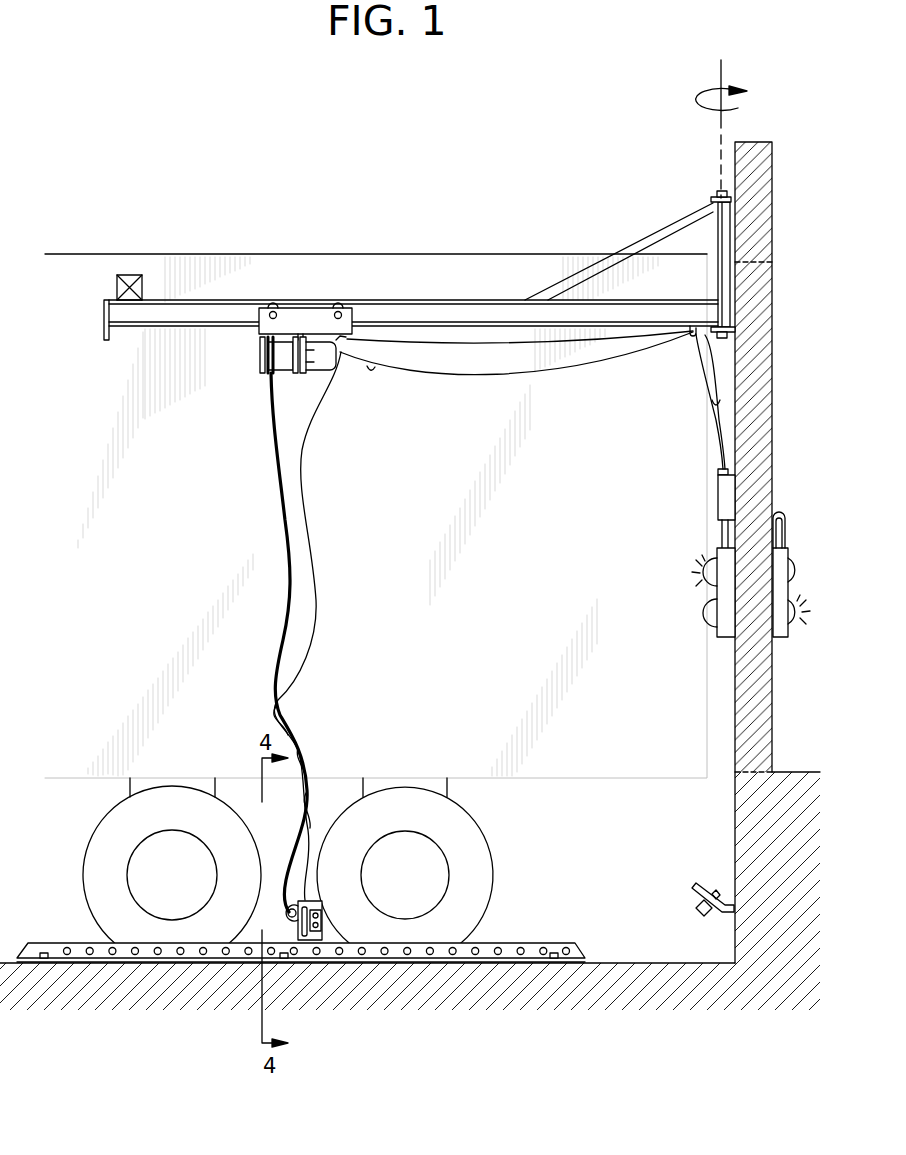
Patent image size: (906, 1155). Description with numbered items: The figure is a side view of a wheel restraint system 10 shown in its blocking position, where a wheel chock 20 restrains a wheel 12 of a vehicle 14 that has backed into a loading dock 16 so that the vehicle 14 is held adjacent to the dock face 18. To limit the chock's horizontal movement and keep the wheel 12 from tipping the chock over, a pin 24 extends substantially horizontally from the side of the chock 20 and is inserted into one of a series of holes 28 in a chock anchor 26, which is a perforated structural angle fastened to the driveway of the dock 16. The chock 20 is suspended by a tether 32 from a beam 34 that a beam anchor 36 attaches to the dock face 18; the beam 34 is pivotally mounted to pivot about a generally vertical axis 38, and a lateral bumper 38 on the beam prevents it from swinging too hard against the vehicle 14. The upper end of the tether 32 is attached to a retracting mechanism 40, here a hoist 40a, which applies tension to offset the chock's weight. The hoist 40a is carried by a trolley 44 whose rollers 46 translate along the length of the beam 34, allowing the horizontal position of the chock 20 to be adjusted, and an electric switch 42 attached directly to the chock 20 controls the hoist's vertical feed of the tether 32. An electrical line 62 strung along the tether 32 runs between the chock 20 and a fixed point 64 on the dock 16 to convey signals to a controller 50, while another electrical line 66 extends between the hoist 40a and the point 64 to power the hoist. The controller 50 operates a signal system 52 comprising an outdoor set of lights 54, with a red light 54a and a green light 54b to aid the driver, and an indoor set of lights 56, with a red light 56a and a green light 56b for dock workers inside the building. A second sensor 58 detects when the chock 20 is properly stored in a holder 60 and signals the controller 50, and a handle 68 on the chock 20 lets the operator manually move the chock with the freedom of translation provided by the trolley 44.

The wheel restraint system 10 is at (180, 192).
The wheel 12 is at (480, 825).
The vehicle 14 is at (478, 254).
The loading dock 16 is at (614, 849).
The dock face 18 is at (735, 170).
The wheel chock 20 is at (316, 900).
The pin 24 is at (338, 960).
The chock anchor 26 is at (533, 943).
The holes 28 is at (90, 944).
The tether 32 is at (279, 498).
The beam 34 is at (404, 300).
The beam anchor 36 is at (716, 368).
The vertical axis / lateral bumper 38 is at (720, 77).
The retracting mechanism 40 is at (268, 364).
The hoist 40a is at (260, 350).
The electric switch 42 is at (323, 917).
The trolley 44 is at (304, 317).
The rollers 46 is at (274, 306).
The controller 50 is at (718, 494).
The signal system 52 is at (686, 610).
The outdoor set of lights 54 is at (725, 640).
The red light 54a is at (715, 560).
The green light 54b is at (715, 618).
The indoor set of lights 56 is at (780, 638).
The red light 56a is at (796, 565).
The green light 56b is at (790, 628).
The second sensor 58 is at (717, 893).
The holder 60 is at (695, 897).
The electrical line 62 is at (435, 344).
The fixed point 64 is at (723, 470).
The electrical line 66 is at (371, 368).
The handle 68 is at (297, 923).